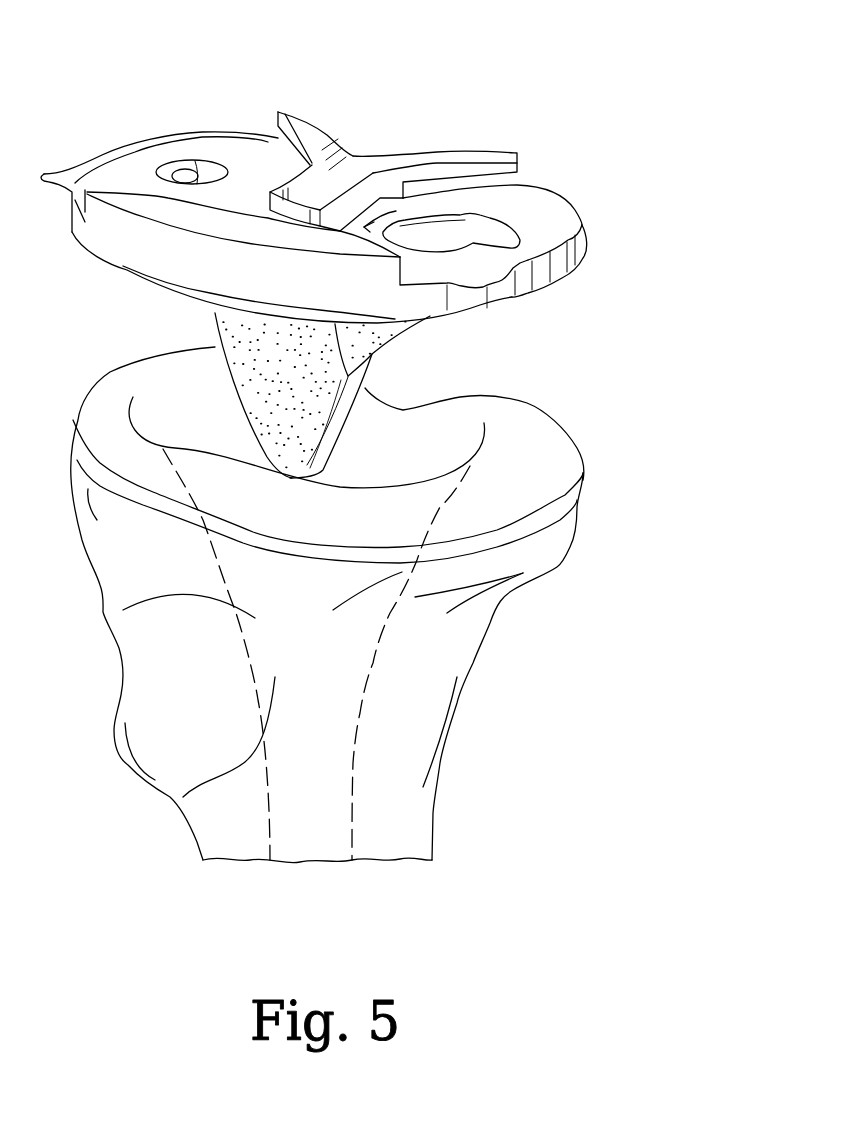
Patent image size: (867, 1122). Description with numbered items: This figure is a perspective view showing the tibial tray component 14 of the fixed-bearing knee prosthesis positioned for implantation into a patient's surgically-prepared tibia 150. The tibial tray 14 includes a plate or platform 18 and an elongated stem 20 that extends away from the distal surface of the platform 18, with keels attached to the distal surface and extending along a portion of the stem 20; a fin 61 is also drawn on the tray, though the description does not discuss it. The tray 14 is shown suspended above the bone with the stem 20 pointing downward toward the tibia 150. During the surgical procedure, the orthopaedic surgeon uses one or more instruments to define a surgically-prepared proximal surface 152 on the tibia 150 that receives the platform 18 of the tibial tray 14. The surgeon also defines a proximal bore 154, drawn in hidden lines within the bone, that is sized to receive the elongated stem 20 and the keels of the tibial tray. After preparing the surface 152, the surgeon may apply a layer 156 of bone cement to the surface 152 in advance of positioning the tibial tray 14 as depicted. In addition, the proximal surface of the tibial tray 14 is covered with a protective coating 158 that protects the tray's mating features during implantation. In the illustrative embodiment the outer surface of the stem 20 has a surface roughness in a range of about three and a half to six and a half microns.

The tibial tray component 14 is at (606, 112).
The platform 18 is at (568, 262).
The elongated stem 20 is at (333, 428).
The fin 61 is at (362, 163).
The protective coating 158 is at (563, 208).
The tibia 150 is at (433, 813).
The surgically-prepared proximal surface 152 is at (585, 492).
The proximal bore 154 is at (360, 754).
The layer of bone cement 156 is at (530, 427).